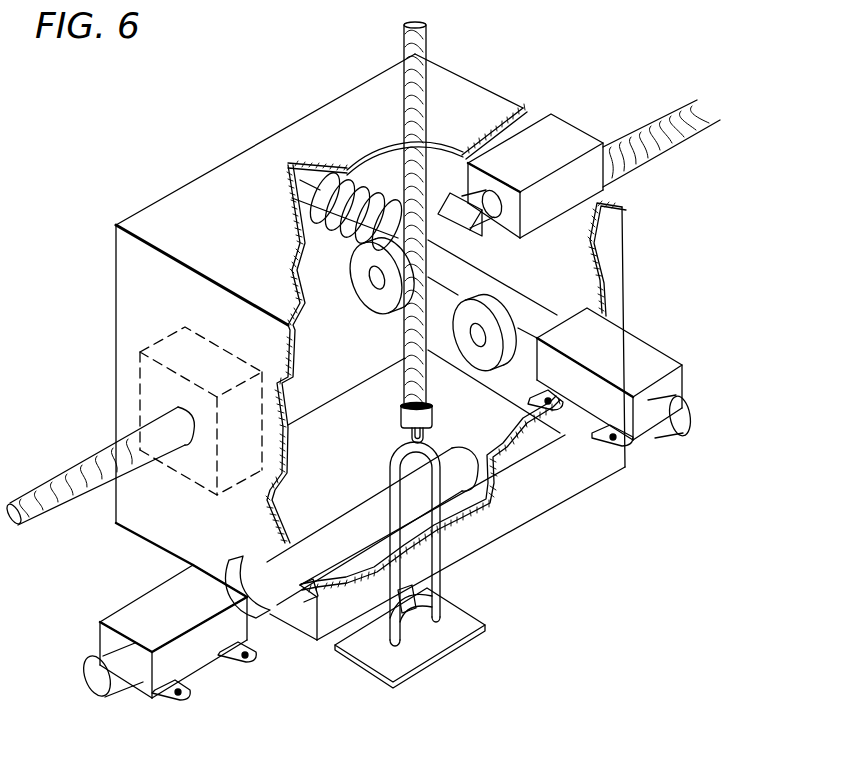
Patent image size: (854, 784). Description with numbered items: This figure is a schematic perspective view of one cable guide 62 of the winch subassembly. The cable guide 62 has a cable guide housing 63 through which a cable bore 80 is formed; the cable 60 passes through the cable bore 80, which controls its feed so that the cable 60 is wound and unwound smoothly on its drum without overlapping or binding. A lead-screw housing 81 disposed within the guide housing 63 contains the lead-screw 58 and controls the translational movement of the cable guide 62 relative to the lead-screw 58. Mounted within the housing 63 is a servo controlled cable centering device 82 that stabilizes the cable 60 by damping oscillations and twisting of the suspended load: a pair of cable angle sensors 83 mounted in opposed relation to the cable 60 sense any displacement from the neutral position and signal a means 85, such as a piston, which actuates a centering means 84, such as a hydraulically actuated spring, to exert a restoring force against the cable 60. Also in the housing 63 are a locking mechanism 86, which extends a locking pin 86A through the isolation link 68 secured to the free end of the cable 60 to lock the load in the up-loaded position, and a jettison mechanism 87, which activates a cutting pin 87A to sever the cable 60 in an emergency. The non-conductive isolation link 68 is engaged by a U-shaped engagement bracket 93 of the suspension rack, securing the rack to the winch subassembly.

The lead-screw 58 is at (368, 313).
The cable 60 is at (427, 86).
The cable guide 62 is at (190, 147).
The cable guide housing 63 is at (187, 218).
The isolation link 68 is at (433, 488).
The cable bore 80 is at (383, 143).
The lead-screw housing 81 is at (150, 338).
The cable centering device 82 is at (557, 300).
The cable angle sensor 83 is at (477, 290).
The centering means 84 is at (298, 183).
The actuating means 85 is at (625, 353).
The locking mechanism 86 is at (188, 658).
The locking pin 86A is at (277, 582).
The jettison mechanism 87 is at (550, 143).
The cutting pin 87A is at (490, 203).
The U-shaped engagement bracket 93 is at (400, 643).